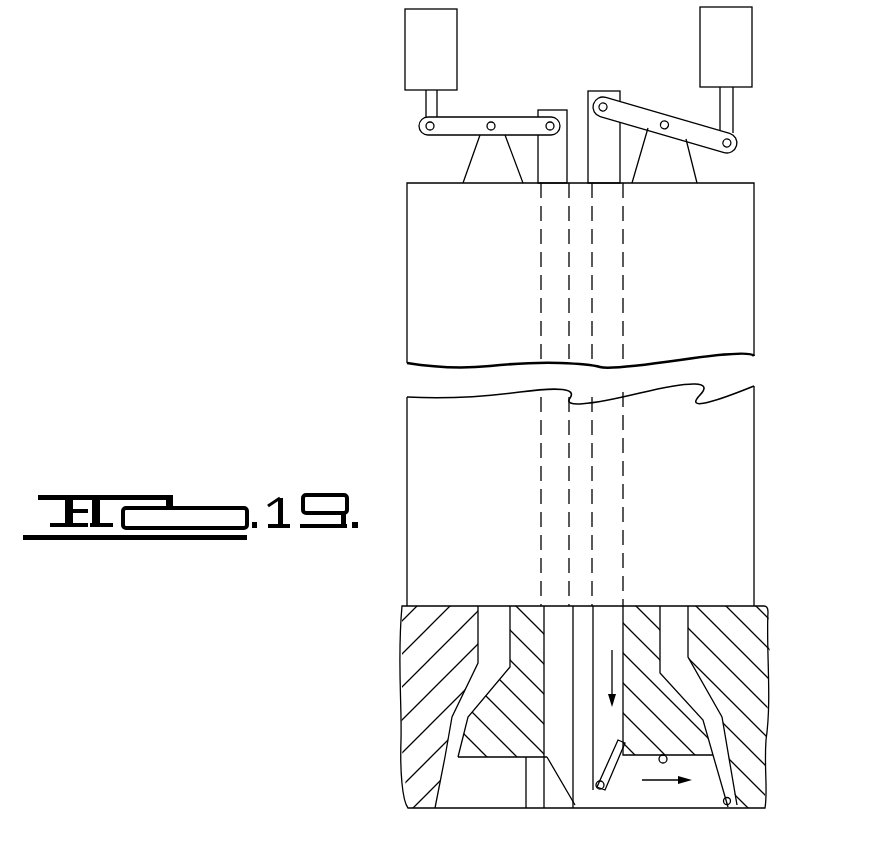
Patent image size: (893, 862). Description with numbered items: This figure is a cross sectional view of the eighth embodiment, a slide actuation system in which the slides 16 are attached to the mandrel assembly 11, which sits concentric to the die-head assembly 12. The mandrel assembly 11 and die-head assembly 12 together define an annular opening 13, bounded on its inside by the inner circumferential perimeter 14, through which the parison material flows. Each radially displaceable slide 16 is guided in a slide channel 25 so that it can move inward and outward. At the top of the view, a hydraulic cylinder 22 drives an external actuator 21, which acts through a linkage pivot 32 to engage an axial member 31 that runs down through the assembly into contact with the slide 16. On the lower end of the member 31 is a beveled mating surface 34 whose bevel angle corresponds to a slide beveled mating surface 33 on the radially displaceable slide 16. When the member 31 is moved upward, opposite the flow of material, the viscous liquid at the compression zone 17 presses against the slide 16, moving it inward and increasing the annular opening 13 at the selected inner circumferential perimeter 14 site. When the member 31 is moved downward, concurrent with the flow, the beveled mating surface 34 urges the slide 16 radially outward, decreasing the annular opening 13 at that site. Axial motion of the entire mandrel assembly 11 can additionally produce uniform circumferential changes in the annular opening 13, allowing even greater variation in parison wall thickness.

The mandrel assembly 11 is at (652, 627).
The die-head assembly 12 is at (780, 670).
The annular opening 13 is at (435, 808).
The inner circumferential perimeter 14 is at (727, 803).
The radially displaceable slide 16 is at (688, 797).
The compression zone 17 is at (722, 778).
The external actuator 21 is at (428, 102).
The hydraulic cylinder 22 is at (413, 43).
The slide channel 25 is at (663, 755).
The axial member 31 is at (543, 162).
The linkage pivot 32 is at (491, 123).
The slide beveled mating surface 33 is at (600, 783).
The beveled mating surface 34 is at (600, 782).